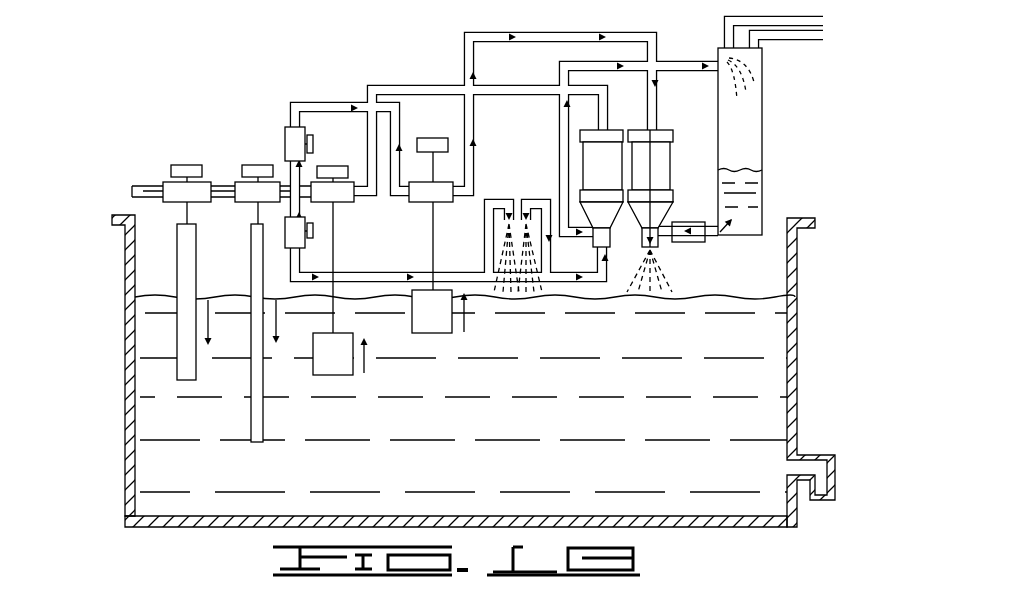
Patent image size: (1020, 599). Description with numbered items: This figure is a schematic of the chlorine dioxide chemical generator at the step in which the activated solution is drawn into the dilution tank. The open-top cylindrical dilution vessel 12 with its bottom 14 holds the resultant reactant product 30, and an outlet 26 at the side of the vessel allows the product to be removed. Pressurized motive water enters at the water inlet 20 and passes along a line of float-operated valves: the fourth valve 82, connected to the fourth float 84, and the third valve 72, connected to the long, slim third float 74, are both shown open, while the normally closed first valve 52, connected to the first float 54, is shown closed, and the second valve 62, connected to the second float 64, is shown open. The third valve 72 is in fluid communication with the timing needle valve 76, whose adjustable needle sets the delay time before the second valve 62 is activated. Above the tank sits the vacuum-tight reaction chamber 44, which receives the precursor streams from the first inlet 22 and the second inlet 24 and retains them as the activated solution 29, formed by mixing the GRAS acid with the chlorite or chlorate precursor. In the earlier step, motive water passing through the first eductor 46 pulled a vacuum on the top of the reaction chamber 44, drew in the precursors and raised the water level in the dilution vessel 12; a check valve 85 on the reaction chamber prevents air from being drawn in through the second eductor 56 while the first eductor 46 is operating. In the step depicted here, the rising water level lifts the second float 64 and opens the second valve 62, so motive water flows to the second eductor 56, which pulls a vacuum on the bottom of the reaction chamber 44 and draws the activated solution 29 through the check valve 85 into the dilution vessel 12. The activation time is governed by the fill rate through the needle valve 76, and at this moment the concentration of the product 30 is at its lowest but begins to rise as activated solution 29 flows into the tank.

The dilution vessel 12 is at (454, 388).
The bottom 14 is at (175, 527).
The water inlet 20 is at (120, 190).
The first inlet 22 is at (797, 14).
The second inlet 24 is at (785, 38).
The outlet 26 is at (809, 455).
The activated solution 29 is at (753, 197).
The resultant reactant product 30 is at (607, 432).
The reaction chamber 44 is at (782, 141).
The first eductor 46 is at (582, 163).
The first valve 52 is at (334, 166).
The first float 54 is at (340, 377).
The second eductor 56 is at (658, 128).
The second valve 62 is at (439, 138).
The second float 64 is at (430, 333).
The third valve 72 is at (258, 165).
The third float 74 is at (251, 417).
The timing needle valve 76 is at (313, 231).
The fourth valve 82 is at (186, 165).
The fourth float 84 is at (177, 270).
The check valve 85 is at (690, 222).